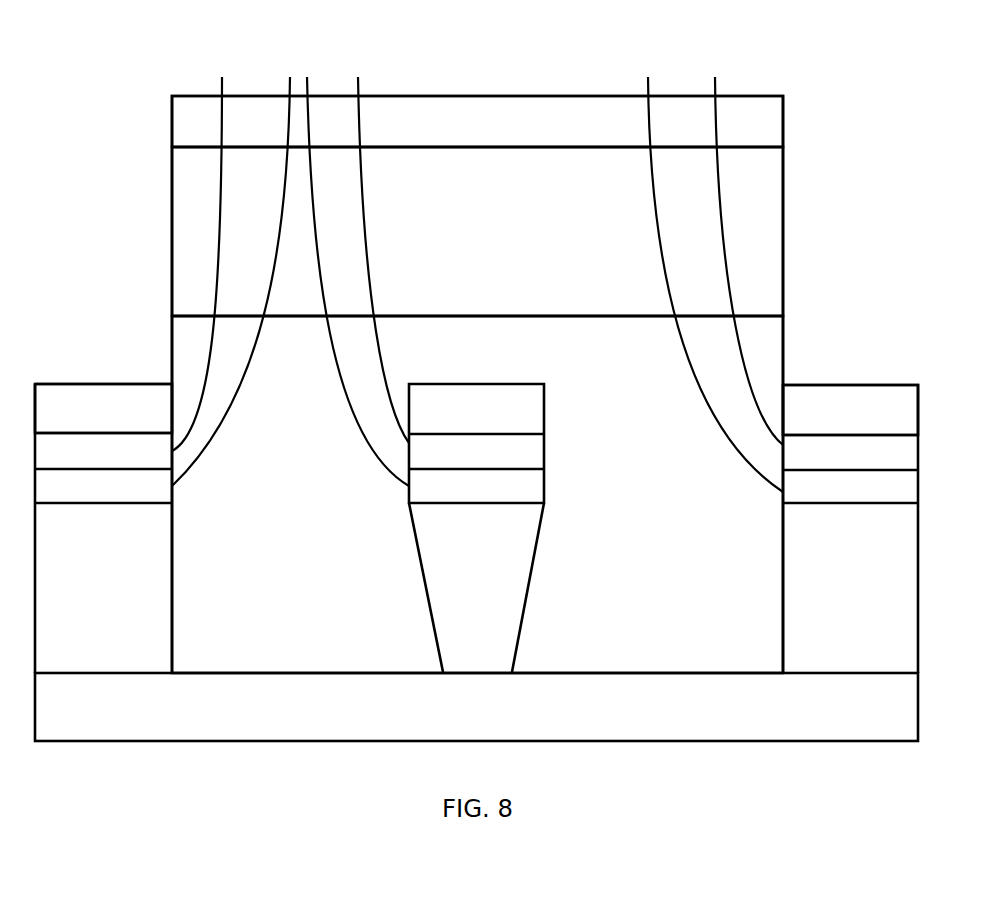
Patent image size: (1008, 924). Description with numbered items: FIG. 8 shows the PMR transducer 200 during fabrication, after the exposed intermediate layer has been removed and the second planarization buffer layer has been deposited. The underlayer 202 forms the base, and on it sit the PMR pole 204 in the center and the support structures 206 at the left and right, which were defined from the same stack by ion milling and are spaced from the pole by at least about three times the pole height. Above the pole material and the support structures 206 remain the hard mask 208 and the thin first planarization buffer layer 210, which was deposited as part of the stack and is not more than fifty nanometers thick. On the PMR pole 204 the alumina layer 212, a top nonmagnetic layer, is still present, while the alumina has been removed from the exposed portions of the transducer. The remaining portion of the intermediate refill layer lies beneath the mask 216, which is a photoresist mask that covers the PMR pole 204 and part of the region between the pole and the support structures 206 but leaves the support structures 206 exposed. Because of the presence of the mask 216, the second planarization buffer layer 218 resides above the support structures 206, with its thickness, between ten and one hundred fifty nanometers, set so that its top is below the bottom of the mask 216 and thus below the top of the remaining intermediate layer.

The PMR transducer 200 is at (497, 39).
The underlayer 202 is at (697, 741).
The PMR pole 204 is at (522, 622).
The support structures 206 is at (102, 673).
The hard mask 208 is at (477, 269).
The first planarization buffer layer 210 is at (477, 249).
The alumina layer 212 is at (533, 384).
The mask 216 is at (172, 215).
The second planarization buffer layer 218 is at (783, 102).